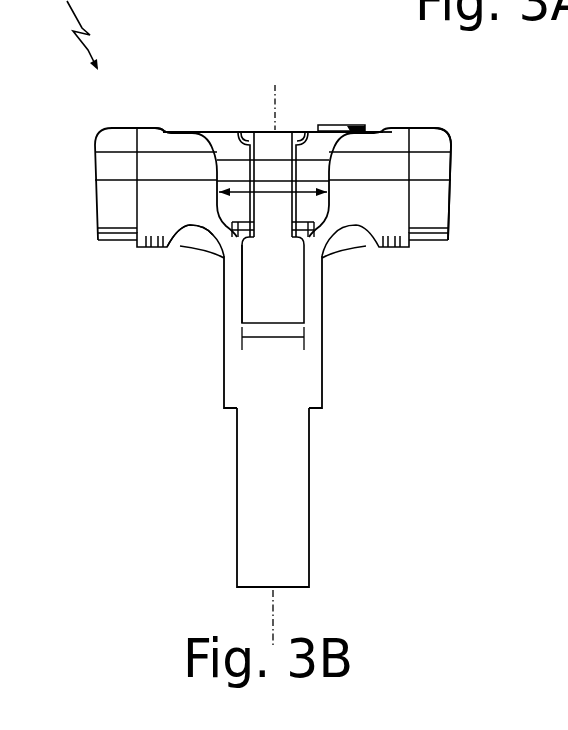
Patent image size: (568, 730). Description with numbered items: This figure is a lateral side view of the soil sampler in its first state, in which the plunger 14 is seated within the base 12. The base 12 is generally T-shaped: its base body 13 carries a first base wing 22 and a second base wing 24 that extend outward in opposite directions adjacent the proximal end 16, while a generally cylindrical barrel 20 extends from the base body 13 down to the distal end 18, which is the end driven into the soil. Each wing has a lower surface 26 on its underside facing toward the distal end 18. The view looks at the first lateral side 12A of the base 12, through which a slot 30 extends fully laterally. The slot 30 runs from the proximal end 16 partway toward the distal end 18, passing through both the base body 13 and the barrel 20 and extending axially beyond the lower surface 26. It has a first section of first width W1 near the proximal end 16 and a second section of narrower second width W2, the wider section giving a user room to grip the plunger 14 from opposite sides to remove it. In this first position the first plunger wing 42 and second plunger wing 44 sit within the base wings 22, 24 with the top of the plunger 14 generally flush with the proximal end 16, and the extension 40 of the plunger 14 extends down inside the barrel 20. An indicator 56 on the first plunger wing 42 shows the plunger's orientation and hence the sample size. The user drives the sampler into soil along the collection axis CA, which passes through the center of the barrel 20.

The base 12 is at (330, 361).
The first lateral side 12A is at (391, 176).
The base body 13 is at (458, 175).
The plunger 14 is at (266, 122).
The proximal end 16 is at (433, 131).
The distal end 18 is at (260, 592).
The barrel 20 is at (273, 455).
The first base wing 22 is at (434, 143).
The second base wing 24 is at (113, 142).
The lower surface 26 is at (188, 244).
The slot 30 is at (243, 302).
The extension 40 is at (277, 282).
The first plunger wing 42 is at (382, 131).
The second plunger wing 44 is at (172, 130).
The indicator 56 is at (342, 126).
The first width W1 is at (274, 340).
The second width W2 is at (276, 197).
The collection axis CA is at (276, 600).